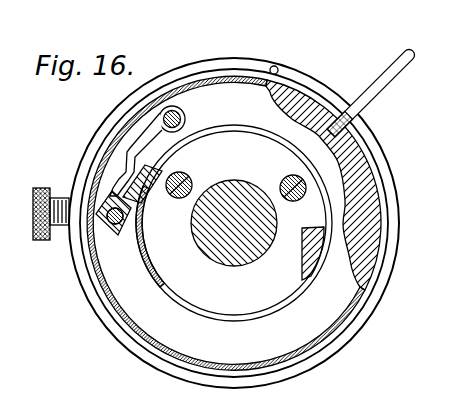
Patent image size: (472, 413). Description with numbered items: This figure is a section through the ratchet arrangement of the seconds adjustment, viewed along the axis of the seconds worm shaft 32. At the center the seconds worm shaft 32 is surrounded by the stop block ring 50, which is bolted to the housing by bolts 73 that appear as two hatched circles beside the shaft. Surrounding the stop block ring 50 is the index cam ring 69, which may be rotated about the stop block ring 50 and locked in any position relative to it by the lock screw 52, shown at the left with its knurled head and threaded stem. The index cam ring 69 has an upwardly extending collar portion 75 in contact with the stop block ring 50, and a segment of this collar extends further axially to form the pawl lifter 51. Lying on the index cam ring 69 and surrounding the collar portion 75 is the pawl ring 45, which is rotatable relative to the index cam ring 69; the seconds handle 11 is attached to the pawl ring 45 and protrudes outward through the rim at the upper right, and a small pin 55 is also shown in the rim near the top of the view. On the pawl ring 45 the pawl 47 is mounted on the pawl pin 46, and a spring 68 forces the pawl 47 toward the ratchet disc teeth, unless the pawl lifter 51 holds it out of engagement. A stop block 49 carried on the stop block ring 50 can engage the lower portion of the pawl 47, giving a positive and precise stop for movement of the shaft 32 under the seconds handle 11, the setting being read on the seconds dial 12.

The seconds handle 11 is at (394, 71).
The seconds dial 12 is at (90, 163).
The seconds worm shaft 32 is at (236, 181).
The pawl ring 45 is at (118, 278).
The pawl pin 46 is at (112, 234).
The pawl 47 is at (149, 186).
The stop block 49 is at (312, 266).
The stop block ring 50 is at (261, 296).
The pawl lifter 51 is at (156, 278).
The lock screw 52 is at (33, 236).
The pivot pin 55 is at (275, 66).
The spring 68 is at (141, 148).
The index cam ring 69 is at (213, 59).
The bolts 73 is at (200, 166).
The collar portion 75 is at (204, 314).